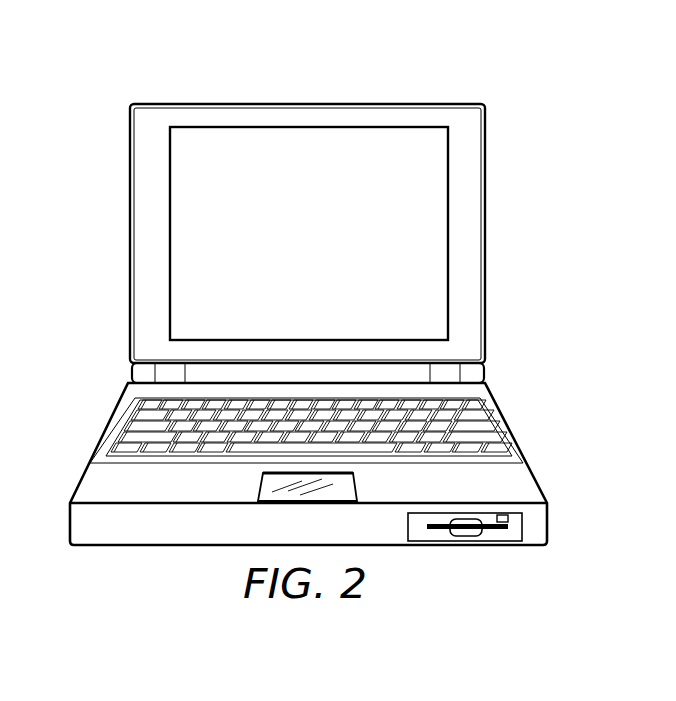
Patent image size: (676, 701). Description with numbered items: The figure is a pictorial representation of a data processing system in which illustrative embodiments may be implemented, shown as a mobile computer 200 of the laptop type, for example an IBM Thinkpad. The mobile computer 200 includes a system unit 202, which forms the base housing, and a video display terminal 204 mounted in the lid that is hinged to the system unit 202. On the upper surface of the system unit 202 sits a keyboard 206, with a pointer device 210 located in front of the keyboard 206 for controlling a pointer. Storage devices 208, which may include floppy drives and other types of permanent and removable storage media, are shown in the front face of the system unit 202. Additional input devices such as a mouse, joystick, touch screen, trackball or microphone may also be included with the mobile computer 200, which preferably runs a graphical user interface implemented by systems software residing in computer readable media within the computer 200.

The mobile computer 200 is at (526, 82).
The system unit 202 is at (113, 416).
The video display terminal 204 is at (330, 254).
The keyboard 206 is at (476, 424).
The storage devices 208 is at (525, 530).
The pointer device 210 is at (345, 487).